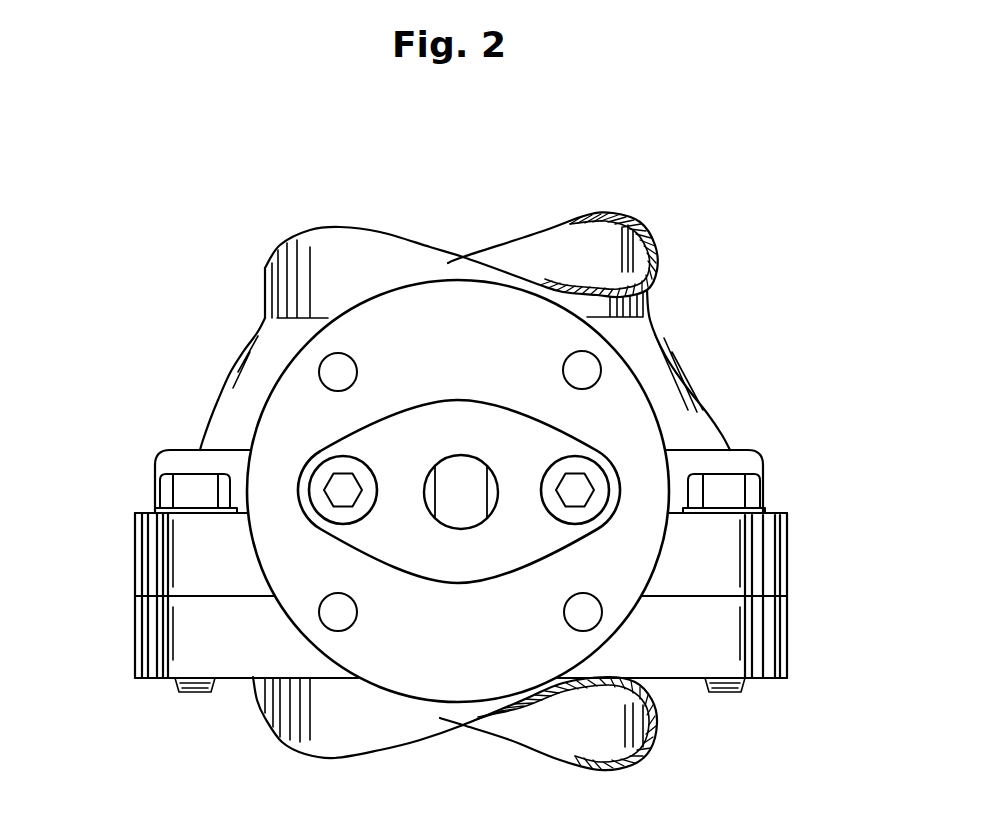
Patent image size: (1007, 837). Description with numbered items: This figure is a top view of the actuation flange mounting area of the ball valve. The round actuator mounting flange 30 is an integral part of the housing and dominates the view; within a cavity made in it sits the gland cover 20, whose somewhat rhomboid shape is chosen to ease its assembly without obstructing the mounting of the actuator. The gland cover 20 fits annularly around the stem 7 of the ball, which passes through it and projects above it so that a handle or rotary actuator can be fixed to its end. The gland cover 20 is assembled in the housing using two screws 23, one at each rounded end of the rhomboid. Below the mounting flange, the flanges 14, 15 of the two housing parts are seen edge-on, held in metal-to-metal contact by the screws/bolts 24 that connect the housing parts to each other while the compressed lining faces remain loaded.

The stem 7 is at (455, 479).
The flange 14 is at (722, 552).
The flange 15 is at (718, 638).
The gland cover 20 is at (522, 452).
The screws 23 is at (343, 482).
The screws/bolts 24 is at (183, 488).
The actuator mounting flange 30 is at (443, 315).